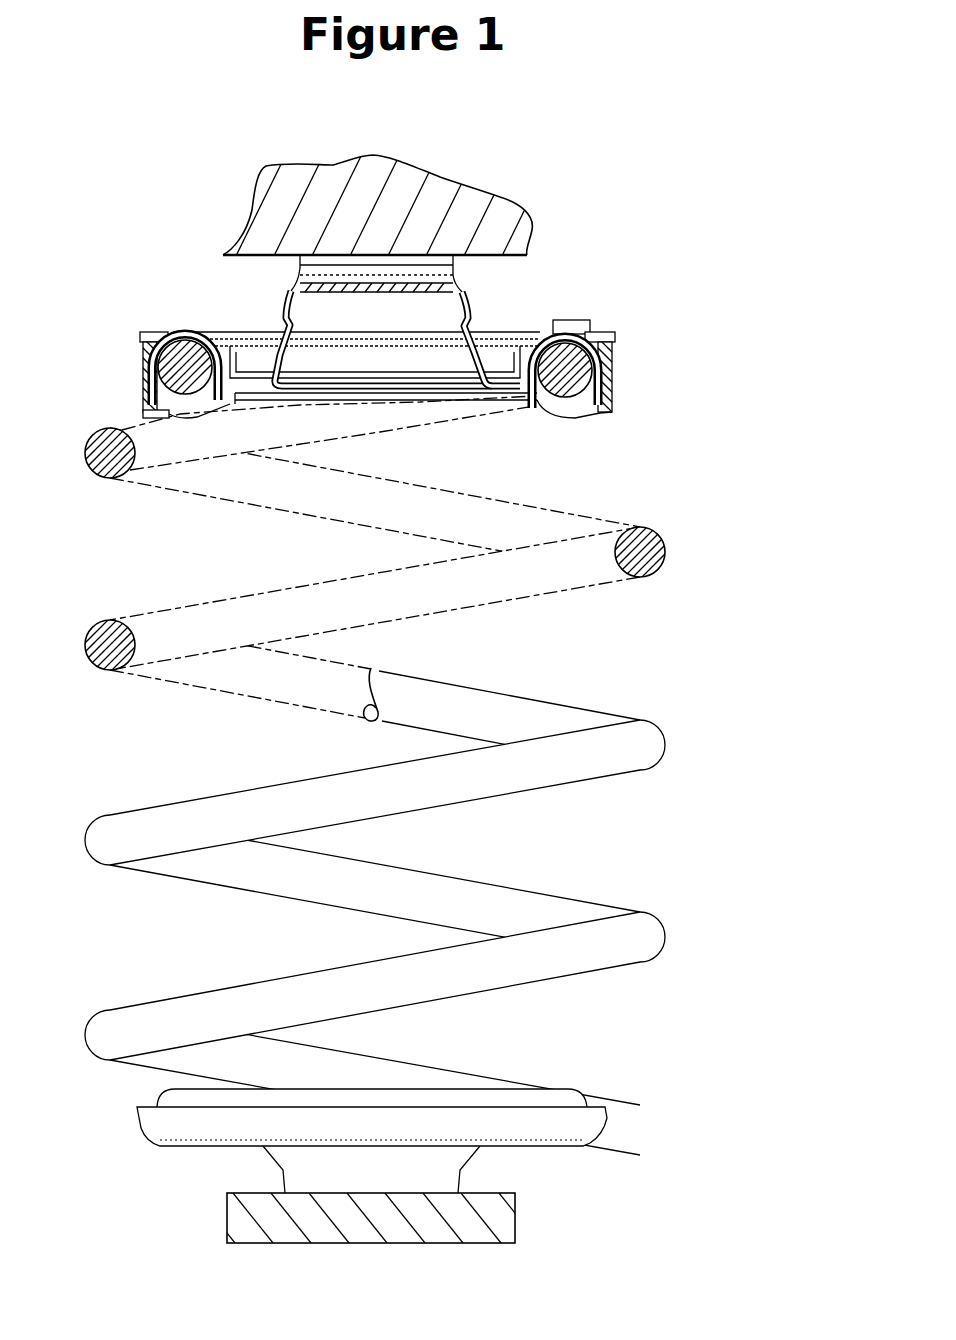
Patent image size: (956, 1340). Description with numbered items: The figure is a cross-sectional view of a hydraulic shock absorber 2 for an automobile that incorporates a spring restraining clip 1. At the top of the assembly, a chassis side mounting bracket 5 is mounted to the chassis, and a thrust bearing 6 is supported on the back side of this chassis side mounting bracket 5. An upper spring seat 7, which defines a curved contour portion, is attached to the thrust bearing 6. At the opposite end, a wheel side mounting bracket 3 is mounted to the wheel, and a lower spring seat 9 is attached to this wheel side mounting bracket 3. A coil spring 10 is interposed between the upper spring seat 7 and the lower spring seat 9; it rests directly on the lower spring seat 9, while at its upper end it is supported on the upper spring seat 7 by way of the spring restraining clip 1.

The spring restraining clip 1 is at (640, 357).
The hydraulic shock absorber 2 is at (442, 775).
The wheel side mounting bracket 3 is at (517, 1217).
The chassis side mounting bracket 5 is at (533, 217).
The thrust bearing 6 is at (437, 267).
The upper spring seat 7 is at (272, 291).
The lower spring seat 9 is at (605, 1127).
The coil spring 10 is at (444, 911).